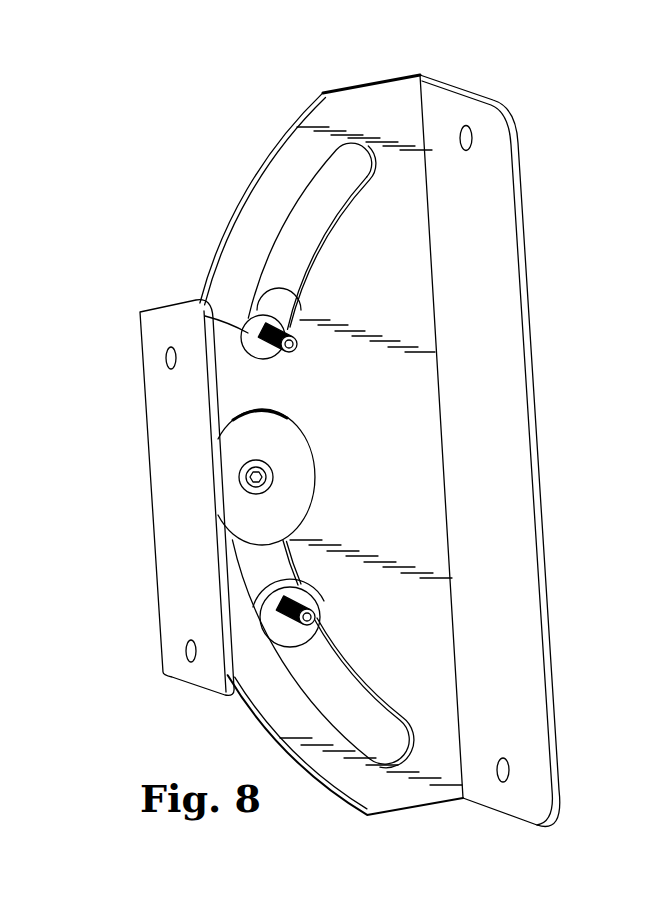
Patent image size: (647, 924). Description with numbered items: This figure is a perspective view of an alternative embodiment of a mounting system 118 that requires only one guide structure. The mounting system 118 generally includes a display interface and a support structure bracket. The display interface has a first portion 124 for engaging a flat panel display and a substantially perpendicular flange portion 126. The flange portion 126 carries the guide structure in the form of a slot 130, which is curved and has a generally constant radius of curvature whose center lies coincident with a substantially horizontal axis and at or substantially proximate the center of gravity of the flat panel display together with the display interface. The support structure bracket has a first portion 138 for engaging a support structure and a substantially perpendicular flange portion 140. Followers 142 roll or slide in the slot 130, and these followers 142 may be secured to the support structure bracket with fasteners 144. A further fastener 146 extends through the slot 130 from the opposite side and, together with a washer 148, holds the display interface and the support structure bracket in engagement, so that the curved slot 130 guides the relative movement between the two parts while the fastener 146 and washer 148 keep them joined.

The mounting system 118 is at (532, 251).
The first portion 124 is at (295, 242).
The flange portion 126 is at (387, 100).
The slot 130 is at (317, 200).
The first portion 138 is at (165, 412).
The flange portion 140 is at (185, 313).
The followers 142 is at (260, 358).
The fasteners 144 is at (163, 307).
The fastener 146 is at (276, 475).
The washer 148 is at (240, 507).